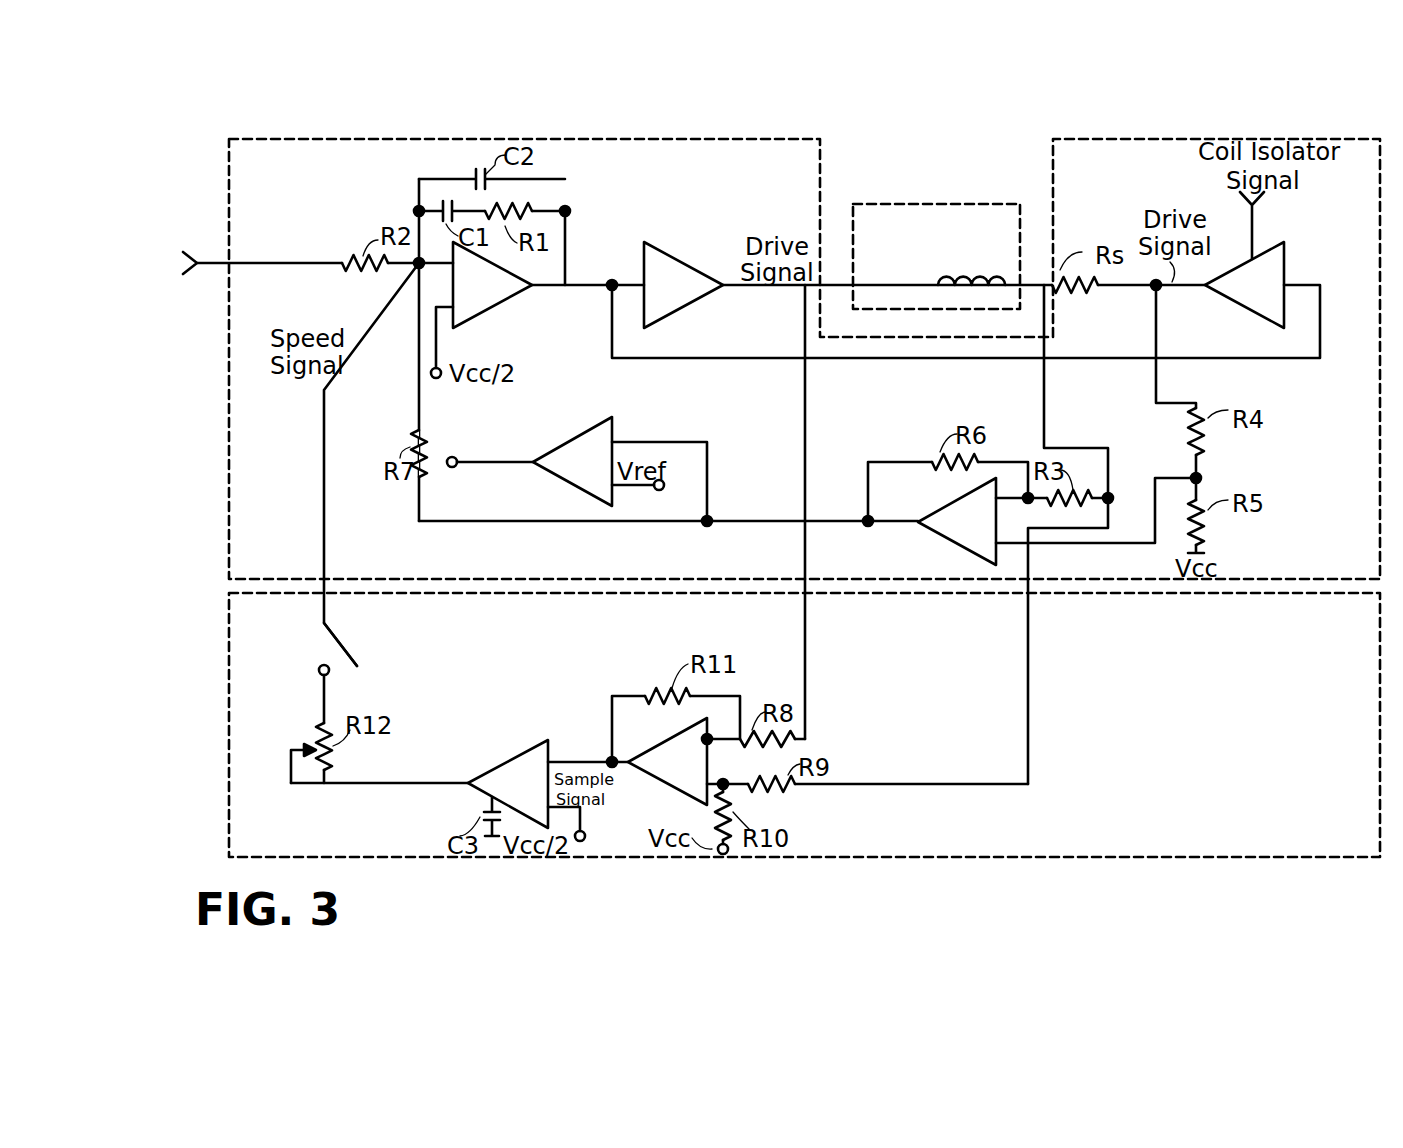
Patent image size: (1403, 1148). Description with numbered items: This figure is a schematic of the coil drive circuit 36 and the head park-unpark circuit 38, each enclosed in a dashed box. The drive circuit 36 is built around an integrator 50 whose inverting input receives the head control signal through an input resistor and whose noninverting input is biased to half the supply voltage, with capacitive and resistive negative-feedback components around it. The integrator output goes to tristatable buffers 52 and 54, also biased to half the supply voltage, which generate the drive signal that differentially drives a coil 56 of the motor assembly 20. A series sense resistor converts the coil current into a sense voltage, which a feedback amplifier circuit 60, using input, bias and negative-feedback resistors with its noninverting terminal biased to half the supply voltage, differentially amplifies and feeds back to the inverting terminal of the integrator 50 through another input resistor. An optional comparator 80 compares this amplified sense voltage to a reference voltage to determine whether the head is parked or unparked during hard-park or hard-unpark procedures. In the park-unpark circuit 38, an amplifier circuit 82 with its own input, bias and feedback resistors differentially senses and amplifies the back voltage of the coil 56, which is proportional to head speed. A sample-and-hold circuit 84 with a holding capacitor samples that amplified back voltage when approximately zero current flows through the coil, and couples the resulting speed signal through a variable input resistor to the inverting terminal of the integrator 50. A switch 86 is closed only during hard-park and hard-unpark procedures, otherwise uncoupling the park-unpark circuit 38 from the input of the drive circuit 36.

The motor assembly 20 is at (909, 204).
The coil drive circuit 36 is at (653, 139).
The head park-unpark circuit 38 is at (608, 857).
The integrator 50 is at (490, 312).
The tristatable buffer 52 is at (660, 250).
The tristatable buffer 54 is at (1288, 258).
The coil 56 is at (965, 278).
The feedback amplifier circuit 60 is at (940, 540).
The comparator 80 is at (571, 485).
The amplifier circuit 82 is at (662, 783).
The sample-and-hold circuit 84 is at (503, 762).
The switch 86 is at (338, 640).